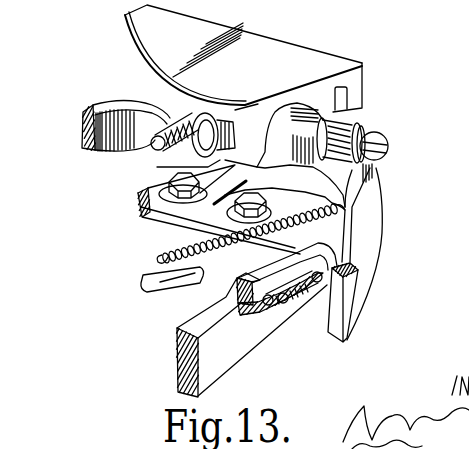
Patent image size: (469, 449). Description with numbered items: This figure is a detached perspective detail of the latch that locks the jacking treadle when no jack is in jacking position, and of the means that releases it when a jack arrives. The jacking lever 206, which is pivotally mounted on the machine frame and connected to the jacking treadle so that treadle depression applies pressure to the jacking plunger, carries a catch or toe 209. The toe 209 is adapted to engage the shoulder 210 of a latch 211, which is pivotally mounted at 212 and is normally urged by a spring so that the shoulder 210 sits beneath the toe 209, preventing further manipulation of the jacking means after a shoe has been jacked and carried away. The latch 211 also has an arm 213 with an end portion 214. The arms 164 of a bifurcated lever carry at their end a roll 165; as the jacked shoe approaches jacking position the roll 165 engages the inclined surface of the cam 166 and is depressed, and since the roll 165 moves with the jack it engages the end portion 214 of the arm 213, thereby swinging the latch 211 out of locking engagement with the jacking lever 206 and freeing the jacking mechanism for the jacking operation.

The arms 164 is at (107, 152).
The roll 165 is at (187, 107).
The cam 166 is at (143, 32).
The jacking lever 206 is at (232, 357).
The catch or toe 209 is at (330, 253).
The shoulder 210 is at (358, 275).
The latch 211 is at (375, 260).
The pivot 212 is at (378, 137).
The arm 213 is at (245, 178).
The end portion 214 is at (248, 130).